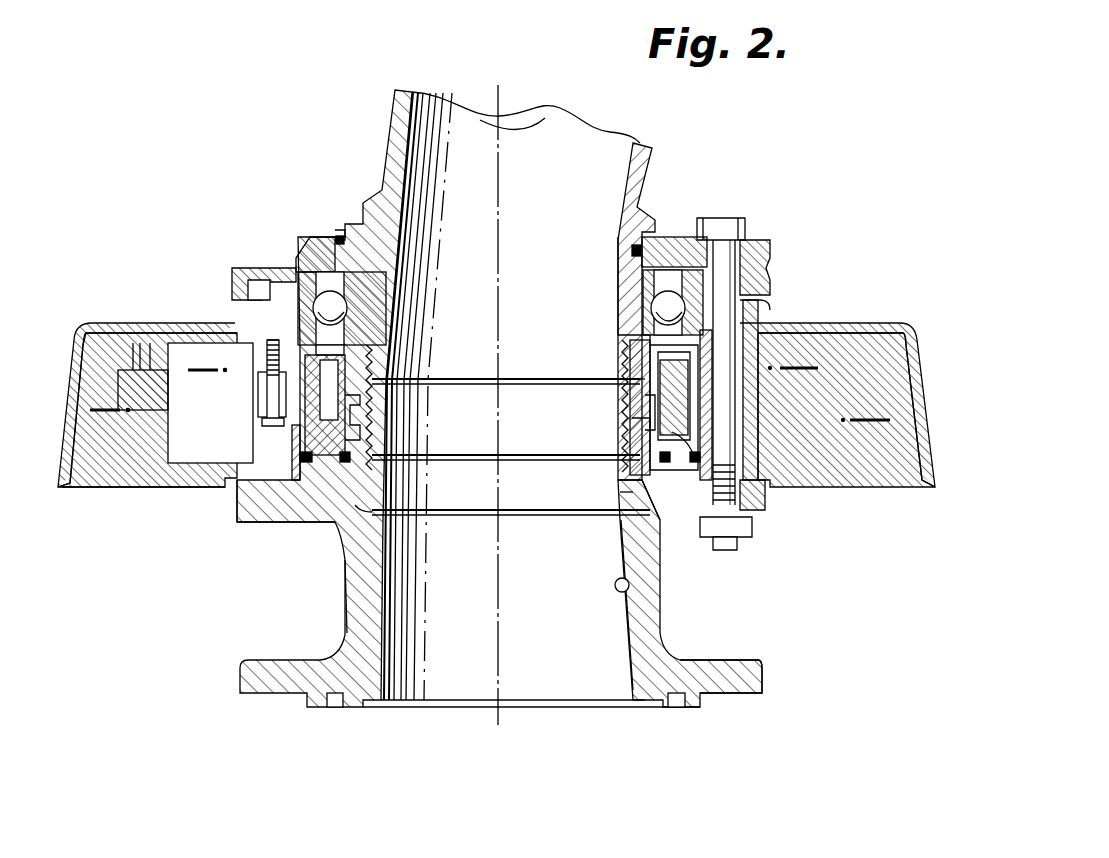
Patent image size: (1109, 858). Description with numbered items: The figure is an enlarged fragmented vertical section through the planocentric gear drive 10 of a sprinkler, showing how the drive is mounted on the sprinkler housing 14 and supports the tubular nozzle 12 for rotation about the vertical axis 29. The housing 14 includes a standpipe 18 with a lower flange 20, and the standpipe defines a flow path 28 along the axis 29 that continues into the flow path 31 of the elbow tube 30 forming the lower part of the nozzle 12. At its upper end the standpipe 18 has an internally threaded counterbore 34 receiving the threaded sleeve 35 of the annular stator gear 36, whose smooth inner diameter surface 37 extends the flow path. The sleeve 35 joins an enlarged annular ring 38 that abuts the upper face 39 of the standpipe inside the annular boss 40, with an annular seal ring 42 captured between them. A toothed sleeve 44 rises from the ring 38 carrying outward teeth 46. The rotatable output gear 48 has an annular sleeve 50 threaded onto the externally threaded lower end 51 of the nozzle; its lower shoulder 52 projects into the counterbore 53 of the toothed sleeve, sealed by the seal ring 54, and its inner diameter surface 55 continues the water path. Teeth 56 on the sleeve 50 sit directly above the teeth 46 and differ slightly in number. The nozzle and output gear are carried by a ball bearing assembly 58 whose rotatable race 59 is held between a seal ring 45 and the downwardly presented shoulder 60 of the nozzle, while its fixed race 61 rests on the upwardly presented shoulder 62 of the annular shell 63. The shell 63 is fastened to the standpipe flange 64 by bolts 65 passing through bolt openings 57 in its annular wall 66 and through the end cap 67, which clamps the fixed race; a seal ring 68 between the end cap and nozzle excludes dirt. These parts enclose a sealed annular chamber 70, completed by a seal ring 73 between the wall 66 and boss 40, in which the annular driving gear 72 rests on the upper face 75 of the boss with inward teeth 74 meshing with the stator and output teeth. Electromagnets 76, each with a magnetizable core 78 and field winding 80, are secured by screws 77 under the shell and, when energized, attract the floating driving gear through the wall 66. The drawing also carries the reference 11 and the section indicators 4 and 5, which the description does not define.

The section line 4- 4 is at (105, 395).
The section line 5- 5 is at (203, 355).
The planocentric gear drive 10 is at (335, 522).
The wheel bearing assembly 11 is at (285, 178).
The tubular nozzle 12 is at (660, 153).
The sprinkler housing 14 is at (152, 510).
The standpipe 18 is at (655, 622).
The lower flange 20 is at (760, 668).
The flow path 28 is at (628, 588).
The vertical axis 29 is at (538, 123).
The elbow tube 30 is at (397, 112).
The flow path 31 is at (416, 147).
The counterbore 34 is at (350, 560).
The threaded sleeve 35 is at (383, 488).
The annular stator gear 36 is at (612, 500).
The inner diameter surface 37 is at (618, 490).
The annular ring 38 is at (670, 520).
The upper face 39 is at (335, 485).
The annular boss 40 is at (300, 470).
The annular seal ring 42 is at (660, 452).
The toothed sleeve 44 is at (380, 418).
The seal ring 45 is at (640, 335).
The teeth 46 is at (362, 400).
The rotatable output gear 48 is at (382, 378).
The annular sleeve 50 is at (630, 352).
The externally threaded lower end 51 is at (620, 340).
The lower shoulder 52 is at (632, 388).
The counterbore 53 is at (650, 413).
The seal ring 54 is at (632, 425).
The inner diameter surface 55 is at (380, 440).
The teeth 56 is at (378, 363).
The bolt openings 57 is at (750, 380).
The ball bearing assembly 58 is at (628, 273).
The rotatable race 59 is at (640, 290).
The downwardly presented shoulder 60 is at (645, 272).
The fixed race 61 is at (700, 237).
The upwardly presented shoulder 62 is at (750, 318).
The annular shell 63 is at (835, 323).
The flange 64 is at (760, 505).
The bolts 65 is at (745, 398).
The annular wall 66 is at (745, 352).
The end cap 67 is at (238, 268).
The seal ring 68 is at (330, 237).
The sealed annular chamber 70 is at (705, 415).
The annular driving gear 72 is at (345, 348).
The seal ring 73 is at (300, 455).
The teeth 74 is at (270, 398).
The upper face 75 is at (695, 440).
The electromagnets 76 is at (160, 470).
The screws 77 is at (235, 368).
The magnetizable core 78 is at (150, 370).
The field winding 80 is at (185, 465).